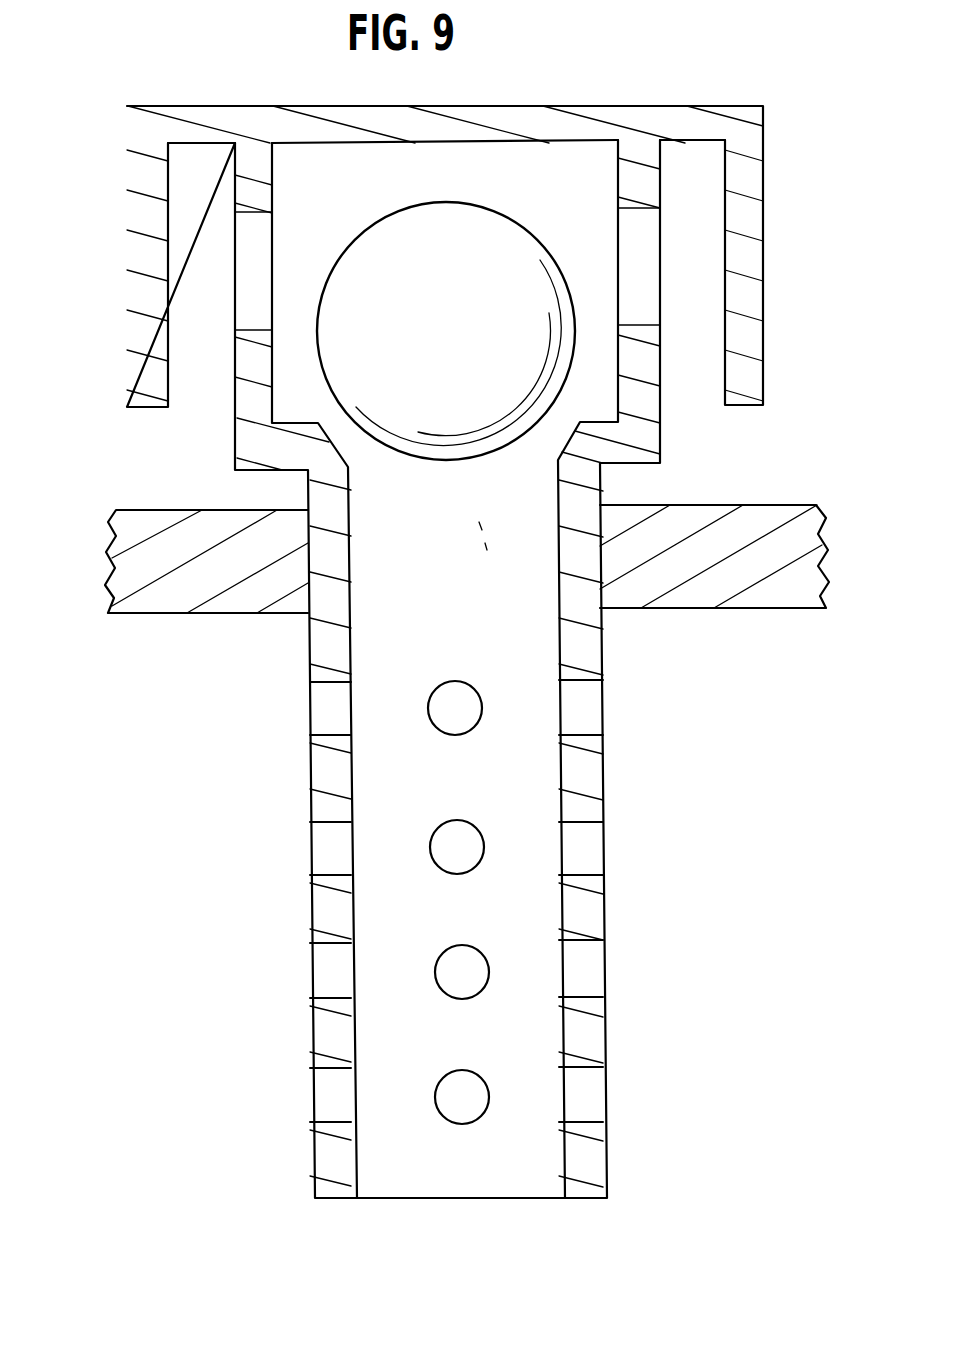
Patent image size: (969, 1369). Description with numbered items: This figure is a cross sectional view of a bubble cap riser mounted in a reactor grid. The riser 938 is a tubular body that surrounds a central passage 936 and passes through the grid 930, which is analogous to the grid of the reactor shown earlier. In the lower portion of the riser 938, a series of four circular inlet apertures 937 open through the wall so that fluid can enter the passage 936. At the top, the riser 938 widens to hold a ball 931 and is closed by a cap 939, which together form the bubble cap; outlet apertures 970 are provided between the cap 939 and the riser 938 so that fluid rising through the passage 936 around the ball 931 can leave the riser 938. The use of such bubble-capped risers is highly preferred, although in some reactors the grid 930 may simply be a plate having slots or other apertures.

The cap 939 is at (577, 105).
The outlet apertures 970 is at (253, 270).
The ball 931 is at (580, 355).
The grid 930 is at (775, 504).
The riser 938 is at (610, 1042).
The passage 936 is at (490, 556).
The inlet apertures 937 is at (333, 842).